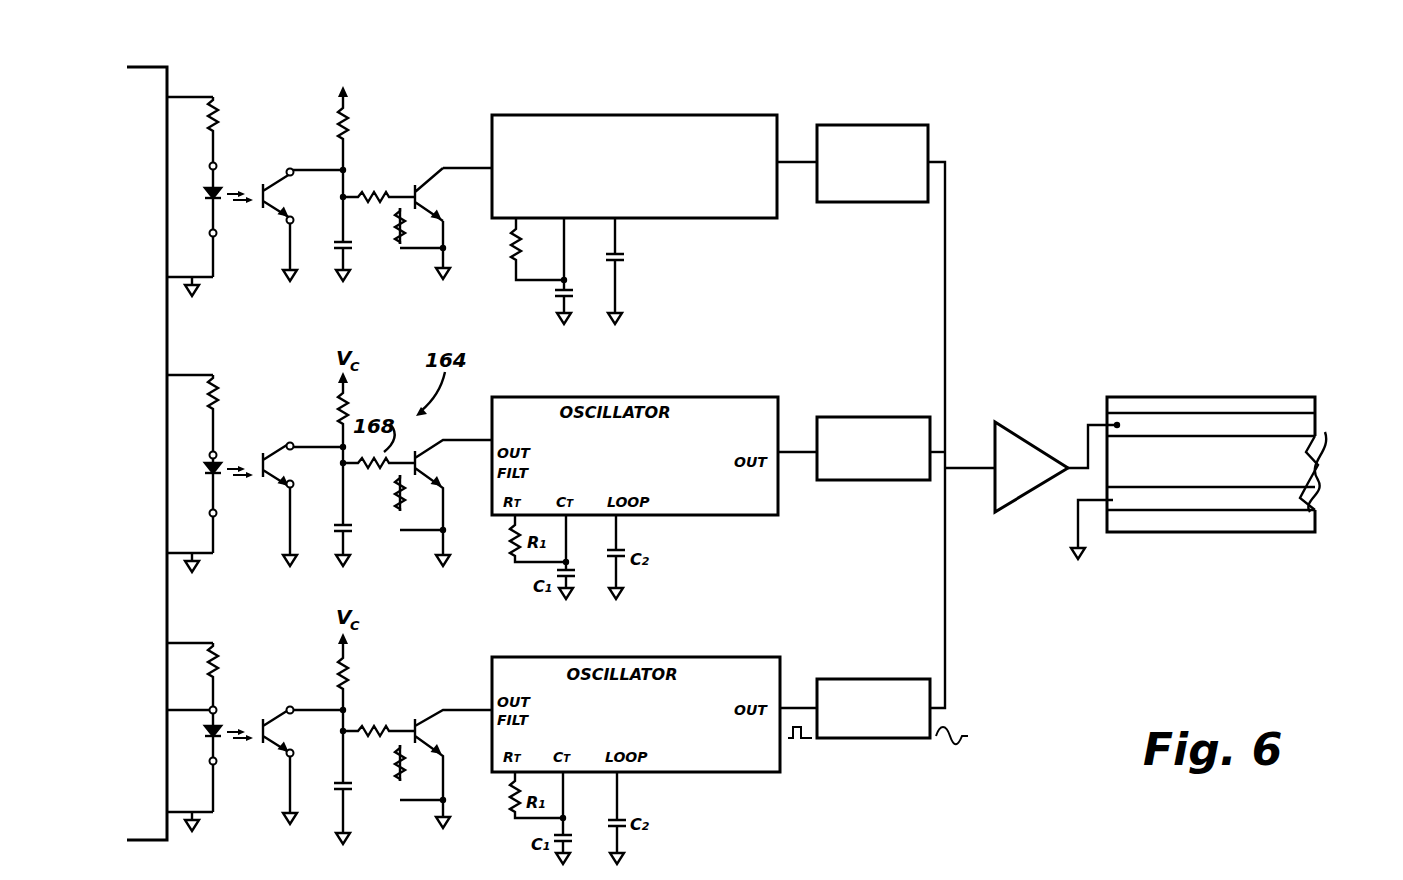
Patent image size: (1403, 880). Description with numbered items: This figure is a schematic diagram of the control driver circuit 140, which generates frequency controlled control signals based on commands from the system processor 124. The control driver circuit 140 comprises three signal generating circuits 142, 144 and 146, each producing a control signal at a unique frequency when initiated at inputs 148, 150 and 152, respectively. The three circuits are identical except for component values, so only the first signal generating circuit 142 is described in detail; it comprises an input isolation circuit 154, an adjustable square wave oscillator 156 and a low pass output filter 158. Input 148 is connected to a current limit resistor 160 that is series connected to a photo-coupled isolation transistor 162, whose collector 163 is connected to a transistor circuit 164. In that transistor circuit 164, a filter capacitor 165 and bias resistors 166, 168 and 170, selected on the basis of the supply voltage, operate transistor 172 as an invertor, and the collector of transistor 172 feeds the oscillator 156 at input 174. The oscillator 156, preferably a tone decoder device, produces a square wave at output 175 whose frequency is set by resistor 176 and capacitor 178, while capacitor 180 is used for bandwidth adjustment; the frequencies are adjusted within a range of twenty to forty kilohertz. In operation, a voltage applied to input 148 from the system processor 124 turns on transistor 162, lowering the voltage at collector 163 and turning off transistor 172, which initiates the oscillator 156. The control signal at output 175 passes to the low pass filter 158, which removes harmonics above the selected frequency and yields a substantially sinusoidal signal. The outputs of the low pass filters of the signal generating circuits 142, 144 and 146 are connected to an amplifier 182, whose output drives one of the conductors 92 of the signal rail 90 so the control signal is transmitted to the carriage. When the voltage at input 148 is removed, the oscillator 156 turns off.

The system processor 124 is at (155, 485).
The input 148 is at (222, 182).
The input 150 is at (184, 362).
The input 152 is at (180, 627).
The current limit resistor 160 is at (218, 122).
The photo-coupled isolation transistor 162 is at (241, 216).
The collector 163 is at (290, 166).
The input isolation circuit 154 is at (416, 173).
The bias resistor 166 is at (349, 123).
The transistor circuit 164 is at (424, 193).
The input 174 is at (492, 164).
The bias resistor 168 is at (363, 188).
The transistor 172 is at (436, 187).
The bias resistor 170 is at (398, 226).
The filter capacitor 165 is at (350, 250).
The control driver circuit 140 is at (634, 143).
The adjustable square wave oscillator 156 is at (526, 106).
The resistor R1 176 is at (517, 249).
The capacitor C1 178 is at (556, 300).
The capacitor C2 180 is at (605, 262).
The output 175 is at (783, 160).
The signal generating circuit 142 is at (915, 142).
The low pass output filter 158 is at (872, 163).
The signal generating circuit 144 is at (903, 405).
The signal generating circuit 146 is at (906, 668).
The amplifier 182 is at (1031, 467).
The signal rail 90 is at (1236, 433).
The conductors 92 is at (1293, 426).